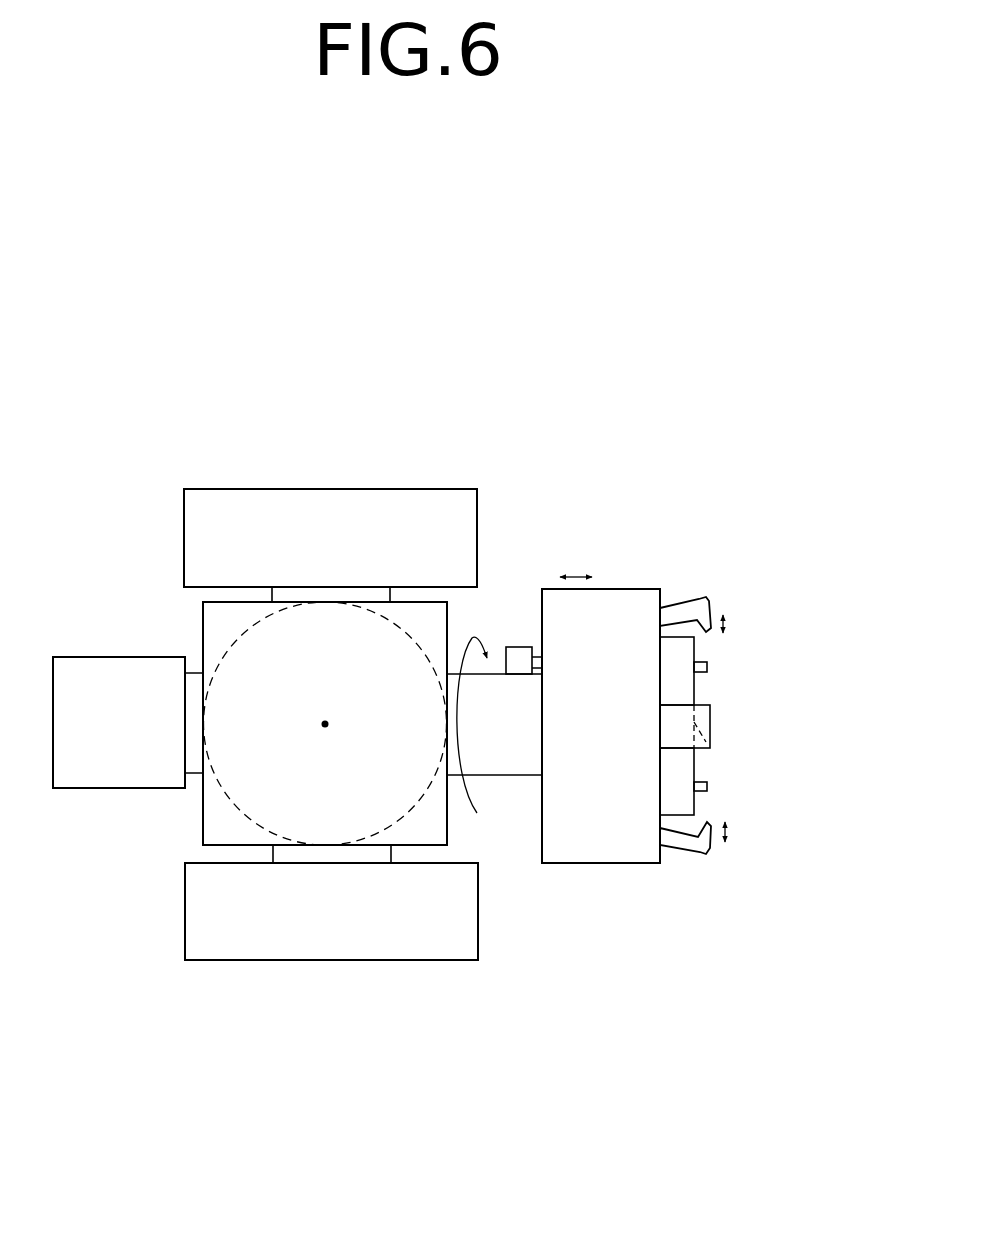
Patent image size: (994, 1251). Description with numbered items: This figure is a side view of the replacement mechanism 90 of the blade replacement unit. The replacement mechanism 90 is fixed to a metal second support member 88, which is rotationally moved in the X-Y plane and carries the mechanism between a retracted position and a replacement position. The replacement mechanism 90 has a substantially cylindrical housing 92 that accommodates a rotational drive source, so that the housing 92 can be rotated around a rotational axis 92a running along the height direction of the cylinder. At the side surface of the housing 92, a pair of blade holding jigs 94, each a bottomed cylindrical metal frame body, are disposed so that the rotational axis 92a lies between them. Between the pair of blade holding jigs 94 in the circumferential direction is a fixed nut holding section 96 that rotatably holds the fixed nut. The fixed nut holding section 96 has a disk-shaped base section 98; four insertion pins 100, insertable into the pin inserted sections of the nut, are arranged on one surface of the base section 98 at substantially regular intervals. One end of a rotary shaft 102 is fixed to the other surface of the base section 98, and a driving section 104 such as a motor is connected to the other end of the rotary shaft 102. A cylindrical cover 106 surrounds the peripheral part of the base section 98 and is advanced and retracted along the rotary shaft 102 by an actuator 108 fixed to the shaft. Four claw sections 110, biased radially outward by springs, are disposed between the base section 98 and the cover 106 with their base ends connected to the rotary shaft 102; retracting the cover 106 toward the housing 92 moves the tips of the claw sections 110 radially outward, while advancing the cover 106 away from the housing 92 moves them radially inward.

The replacement mechanism 90 is at (556, 405).
The blade holding jig 94 is at (345, 478).
The second support member 88 is at (203, 835).
The housing 92 is at (225, 797).
The rotational axis 92a is at (325, 721).
The driving section 104 is at (115, 667).
The rotary shaft 102 is at (495, 762).
The actuator 108 is at (520, 652).
The fixed nut holding section 96 is at (635, 584).
The cover 106 is at (581, 848).
The base section 98 is at (685, 683).
The insertion pin 100 is at (707, 667).
The claw section 110 is at (702, 600).